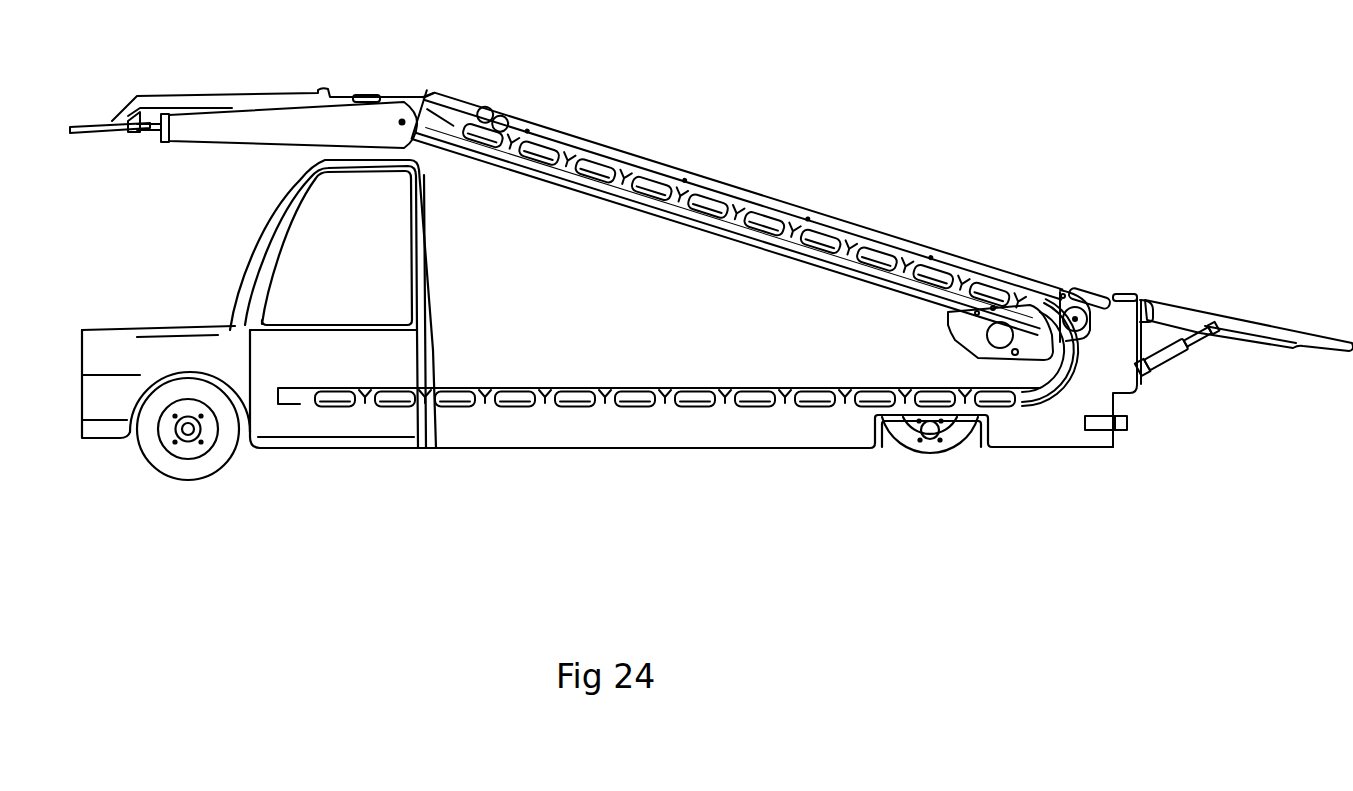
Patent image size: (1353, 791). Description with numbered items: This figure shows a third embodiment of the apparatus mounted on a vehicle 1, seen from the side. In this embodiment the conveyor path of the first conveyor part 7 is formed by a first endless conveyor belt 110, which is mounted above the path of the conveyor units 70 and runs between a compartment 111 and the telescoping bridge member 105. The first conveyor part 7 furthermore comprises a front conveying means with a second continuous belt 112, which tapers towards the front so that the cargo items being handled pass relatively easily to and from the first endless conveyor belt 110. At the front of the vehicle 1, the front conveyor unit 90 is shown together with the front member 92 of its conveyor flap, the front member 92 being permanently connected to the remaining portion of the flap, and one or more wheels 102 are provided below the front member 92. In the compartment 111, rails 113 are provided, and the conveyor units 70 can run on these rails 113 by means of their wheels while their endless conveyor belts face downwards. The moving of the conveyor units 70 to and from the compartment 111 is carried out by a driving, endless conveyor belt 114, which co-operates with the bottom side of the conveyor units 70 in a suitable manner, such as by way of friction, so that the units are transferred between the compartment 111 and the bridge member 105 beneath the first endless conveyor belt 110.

The vehicle 1 is at (80, 350).
The first conveyor part 7 is at (808, 214).
The conveyor units 70 is at (715, 201).
The front conveyor unit 90 is at (190, 104).
The front member 92 is at (113, 110).
The wheels 102 is at (146, 132).
The telescoping bridge member 105 is at (82, 127).
The first endless conveyor belt 110 is at (860, 224).
The compartment 111 is at (1043, 422).
The second continuous belt 112 is at (463, 100).
The rails 113 is at (602, 404).
The driving endless conveyor belt 114 is at (948, 322).